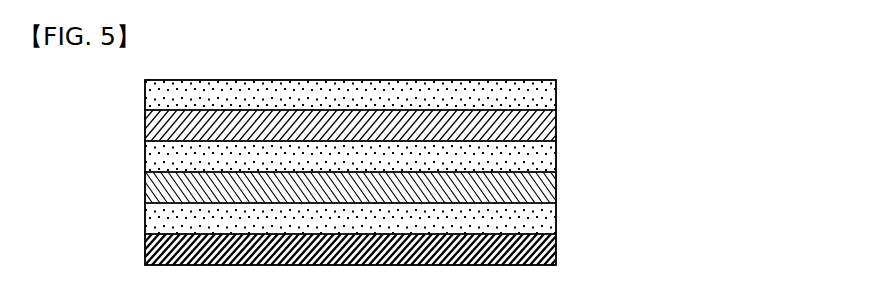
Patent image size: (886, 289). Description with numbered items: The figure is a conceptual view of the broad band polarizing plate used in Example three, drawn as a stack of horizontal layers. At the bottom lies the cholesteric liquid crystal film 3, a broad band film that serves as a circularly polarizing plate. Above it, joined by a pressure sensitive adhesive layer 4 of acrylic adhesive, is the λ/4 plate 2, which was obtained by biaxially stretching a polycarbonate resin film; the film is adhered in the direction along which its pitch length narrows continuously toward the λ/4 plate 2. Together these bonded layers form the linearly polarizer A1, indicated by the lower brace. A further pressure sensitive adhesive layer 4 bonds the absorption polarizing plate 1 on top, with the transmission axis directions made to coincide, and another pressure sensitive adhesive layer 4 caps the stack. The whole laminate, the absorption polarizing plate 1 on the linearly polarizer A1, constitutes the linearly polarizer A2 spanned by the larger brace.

The absorption polarizing plate 1 is at (540, 128).
The λ/4 plate 2 is at (556, 192).
The cholesteric liquid crystal film 3 is at (556, 250).
The pressure sensitive adhesive layer 4 is at (535, 93).
The linearly polarizer A1 is at (698, 177).
The linearly polarizer A2 is at (778, 110).